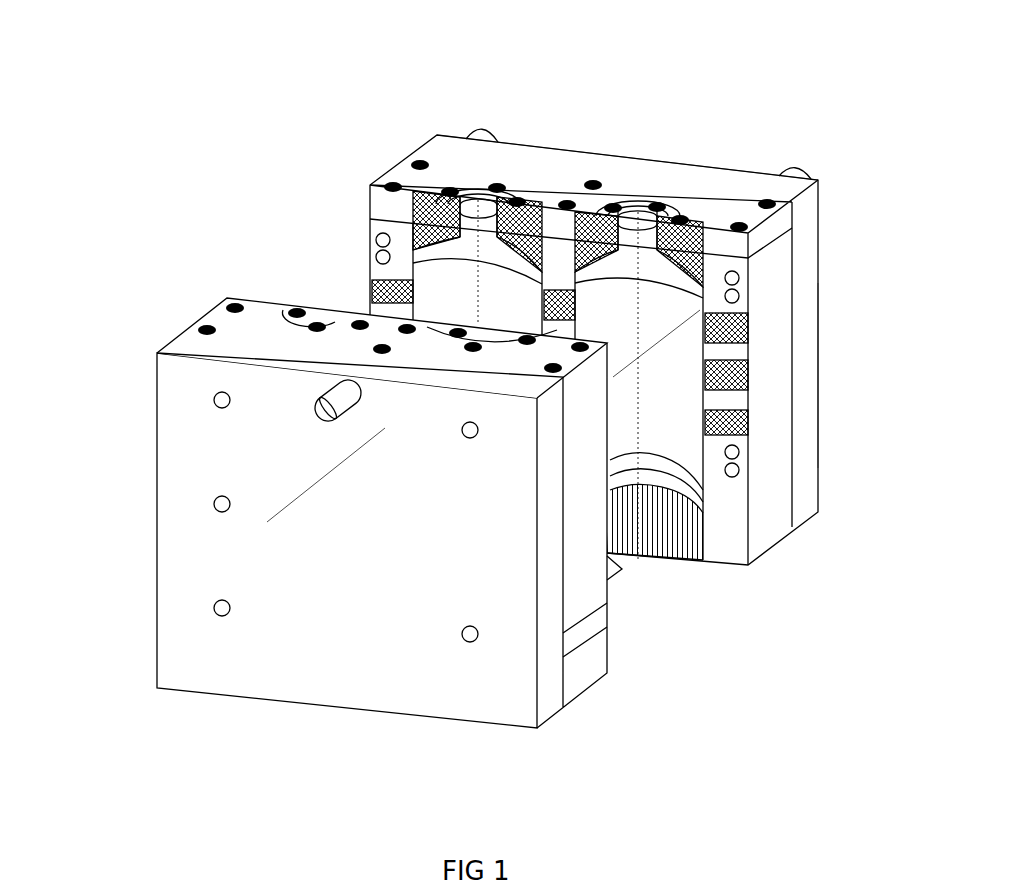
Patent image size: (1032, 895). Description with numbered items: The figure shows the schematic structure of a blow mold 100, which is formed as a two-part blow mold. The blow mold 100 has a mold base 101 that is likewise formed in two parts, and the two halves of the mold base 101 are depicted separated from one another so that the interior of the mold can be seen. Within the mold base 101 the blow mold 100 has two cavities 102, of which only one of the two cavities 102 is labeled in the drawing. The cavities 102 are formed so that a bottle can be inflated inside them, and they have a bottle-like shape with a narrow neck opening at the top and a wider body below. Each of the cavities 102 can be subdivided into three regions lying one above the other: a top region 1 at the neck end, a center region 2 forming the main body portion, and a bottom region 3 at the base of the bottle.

The blow mold 100 is at (830, 86).
The mold base 101 is at (240, 312).
The cavity 102 is at (453, 285).
The top region 1 is at (838, 222).
The center region 2 is at (838, 283).
The bottom region 3 is at (838, 478).